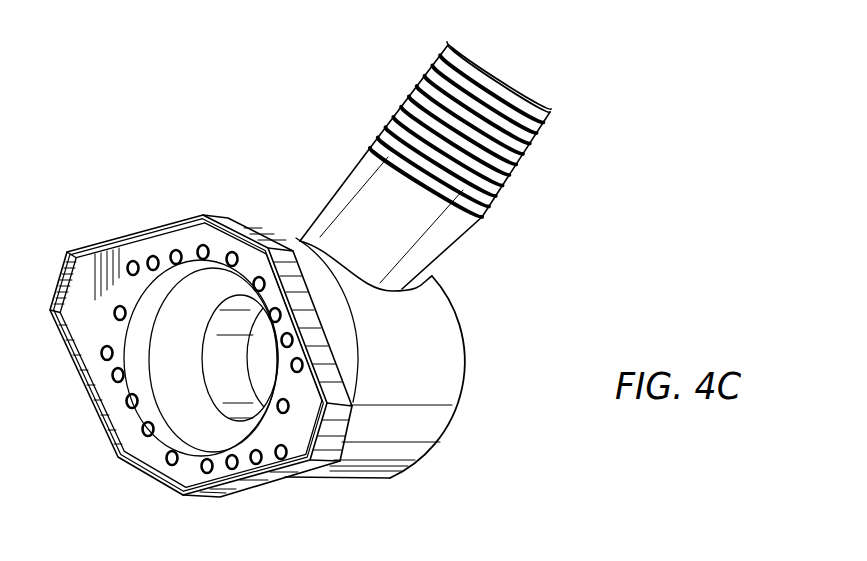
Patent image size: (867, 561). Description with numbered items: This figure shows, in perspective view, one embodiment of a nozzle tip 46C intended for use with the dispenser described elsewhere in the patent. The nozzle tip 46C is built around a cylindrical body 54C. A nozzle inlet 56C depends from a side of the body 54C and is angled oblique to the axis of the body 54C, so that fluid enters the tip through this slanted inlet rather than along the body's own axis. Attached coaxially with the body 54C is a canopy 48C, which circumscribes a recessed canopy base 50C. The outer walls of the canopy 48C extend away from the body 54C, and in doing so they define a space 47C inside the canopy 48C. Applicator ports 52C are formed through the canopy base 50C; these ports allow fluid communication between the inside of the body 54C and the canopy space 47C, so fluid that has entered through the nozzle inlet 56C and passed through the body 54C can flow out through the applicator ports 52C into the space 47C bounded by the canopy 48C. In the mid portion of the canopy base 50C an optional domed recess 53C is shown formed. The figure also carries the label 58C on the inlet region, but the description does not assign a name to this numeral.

The nozzle tip 46C is at (489, 306).
The space 47C is at (156, 411).
The canopy 48C is at (168, 226).
The canopy base 50C is at (103, 270).
The applicator ports 52C is at (109, 363).
The domed recess 53C is at (222, 383).
The cylindrical body 54C is at (418, 432).
The nozzle inlet 56C is at (338, 160).
The threaded portion 58C is at (517, 170).